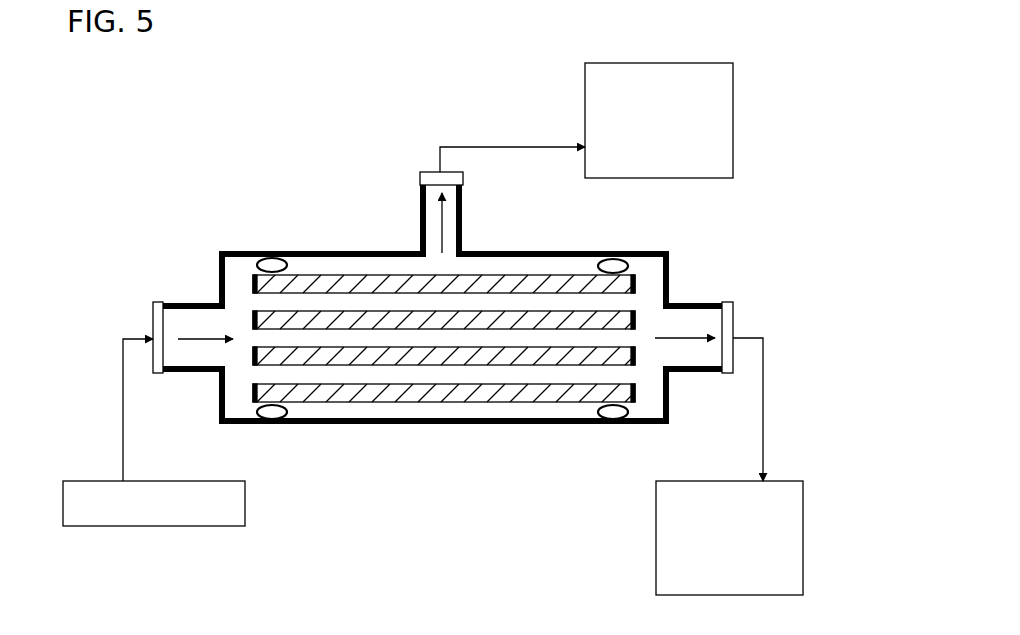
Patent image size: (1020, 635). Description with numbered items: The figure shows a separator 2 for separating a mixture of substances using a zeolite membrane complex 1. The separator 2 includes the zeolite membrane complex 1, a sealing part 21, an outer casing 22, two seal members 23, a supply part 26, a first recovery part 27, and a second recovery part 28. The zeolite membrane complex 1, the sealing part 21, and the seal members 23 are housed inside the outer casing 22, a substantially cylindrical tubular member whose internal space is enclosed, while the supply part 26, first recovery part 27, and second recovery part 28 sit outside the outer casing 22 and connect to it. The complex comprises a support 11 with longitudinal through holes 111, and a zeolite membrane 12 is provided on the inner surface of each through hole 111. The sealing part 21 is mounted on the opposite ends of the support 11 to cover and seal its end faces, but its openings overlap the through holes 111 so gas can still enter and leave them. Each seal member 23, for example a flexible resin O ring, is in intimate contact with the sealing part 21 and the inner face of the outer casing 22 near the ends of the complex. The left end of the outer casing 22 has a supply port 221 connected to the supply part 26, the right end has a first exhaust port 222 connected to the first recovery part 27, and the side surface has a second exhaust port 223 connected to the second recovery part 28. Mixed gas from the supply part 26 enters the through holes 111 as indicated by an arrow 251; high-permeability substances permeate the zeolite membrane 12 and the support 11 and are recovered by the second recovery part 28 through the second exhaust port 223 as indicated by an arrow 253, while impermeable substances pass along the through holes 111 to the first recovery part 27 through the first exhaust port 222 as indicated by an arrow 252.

The zeolite membrane complex 1 is at (441, 376).
The separator 2 is at (178, 132).
The support 11 is at (568, 395).
The zeolite membrane 12 is at (500, 330).
The through hole 111 is at (391, 420).
The sealing part 21 is at (253, 287).
The outer casing 22 is at (238, 253).
The seal member 23 is at (275, 264).
The supply port 221 is at (178, 308).
The first exhaust port 222 is at (707, 309).
The second exhaust port 223 is at (425, 195).
The arrow 251 is at (188, 340).
The arrow 252 is at (685, 342).
The arrow 253 is at (441, 222).
The supply part 26 is at (245, 500).
The first recovery part 27 is at (656, 518).
The second recovery part 28 is at (733, 140).